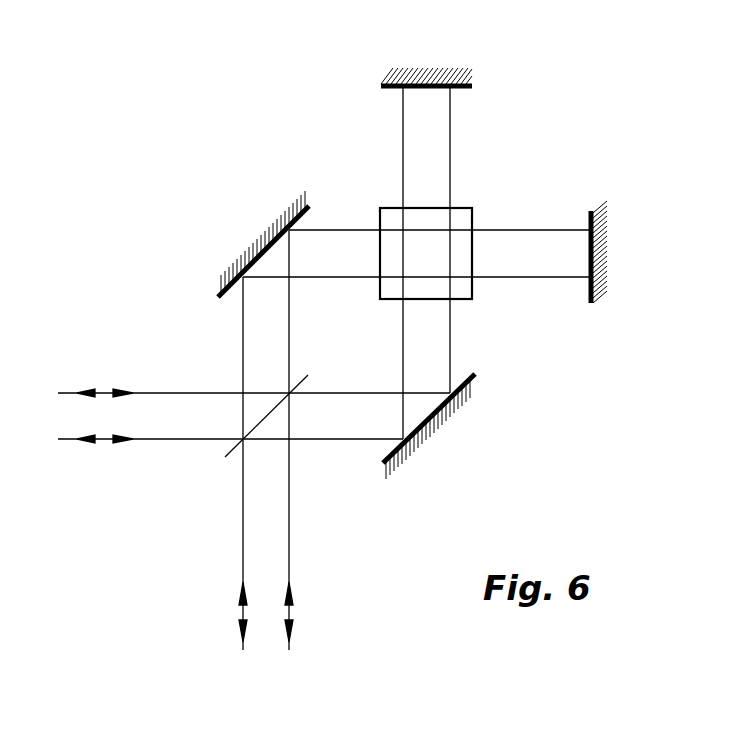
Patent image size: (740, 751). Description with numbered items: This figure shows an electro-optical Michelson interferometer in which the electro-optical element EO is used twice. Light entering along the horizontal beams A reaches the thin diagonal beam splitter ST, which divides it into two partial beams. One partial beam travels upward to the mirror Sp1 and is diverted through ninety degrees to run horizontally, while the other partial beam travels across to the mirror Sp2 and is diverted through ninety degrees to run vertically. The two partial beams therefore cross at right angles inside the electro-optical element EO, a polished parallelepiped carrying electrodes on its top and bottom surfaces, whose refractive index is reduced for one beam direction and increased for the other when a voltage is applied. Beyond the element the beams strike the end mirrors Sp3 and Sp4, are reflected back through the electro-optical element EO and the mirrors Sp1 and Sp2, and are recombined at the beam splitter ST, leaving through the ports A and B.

The mirror Sp1 is at (256, 252).
The mirror Sp2 is at (420, 431).
The mirror Sp3 is at (601, 251).
The mirror Sp4 is at (425, 70).
The electro-optical element EO is at (456, 218).
The beam splitter ST is at (229, 455).
The beam ports A is at (83, 417).
The beam ports B is at (266, 630).